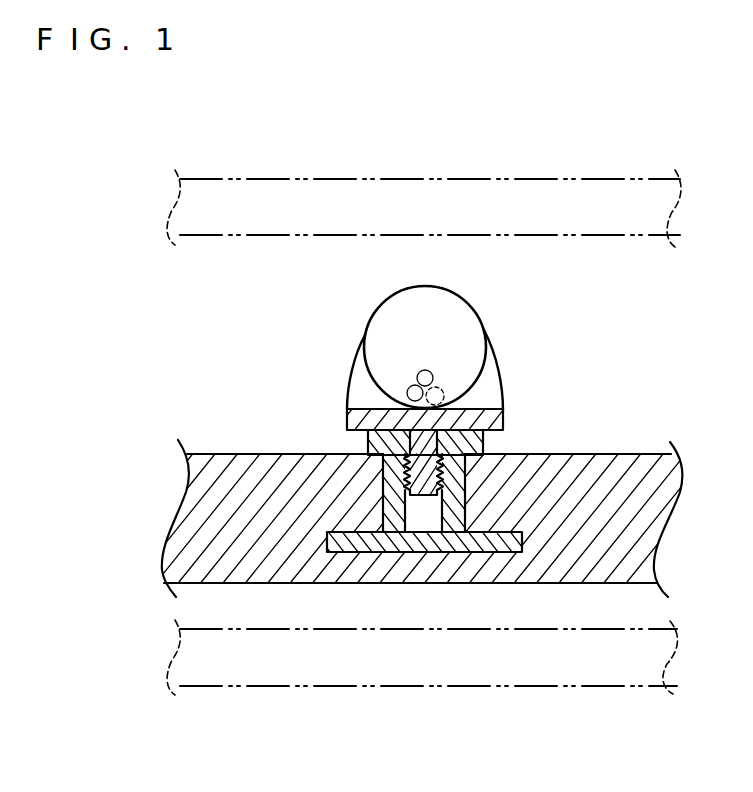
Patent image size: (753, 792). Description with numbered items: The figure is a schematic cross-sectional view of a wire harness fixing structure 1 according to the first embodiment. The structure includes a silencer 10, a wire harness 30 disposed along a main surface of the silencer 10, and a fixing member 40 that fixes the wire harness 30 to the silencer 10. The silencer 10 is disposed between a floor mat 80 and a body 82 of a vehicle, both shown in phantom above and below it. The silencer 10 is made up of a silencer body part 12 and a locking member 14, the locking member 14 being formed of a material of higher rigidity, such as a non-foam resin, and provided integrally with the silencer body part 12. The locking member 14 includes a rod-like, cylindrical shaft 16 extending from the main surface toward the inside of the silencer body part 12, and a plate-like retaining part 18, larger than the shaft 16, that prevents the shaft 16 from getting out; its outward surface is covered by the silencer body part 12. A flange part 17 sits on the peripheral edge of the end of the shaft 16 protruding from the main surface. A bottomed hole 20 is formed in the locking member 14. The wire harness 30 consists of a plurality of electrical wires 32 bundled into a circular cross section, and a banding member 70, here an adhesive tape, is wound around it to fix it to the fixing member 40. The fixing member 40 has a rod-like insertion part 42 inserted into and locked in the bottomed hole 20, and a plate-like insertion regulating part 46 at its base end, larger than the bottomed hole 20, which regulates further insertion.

The wire harness fixing structure 1 is at (218, 368).
The silencer 10 is at (543, 587).
The silencer body part 12 is at (487, 572).
The locking member 14 is at (428, 555).
The shaft 16 is at (393, 547).
The flange part 17 is at (368, 438).
The retaining part 18 is at (360, 545).
The bottomed hole 20 is at (440, 514).
The wire harness 30 is at (479, 381).
The electrical wires 32 is at (432, 370).
The fixing member 40 is at (372, 406).
The insertion part 42 is at (405, 483).
The insertion regulating part 46 is at (500, 414).
The banding member 70 is at (350, 372).
The floor mat 80 is at (622, 178).
The body 82 is at (625, 688).